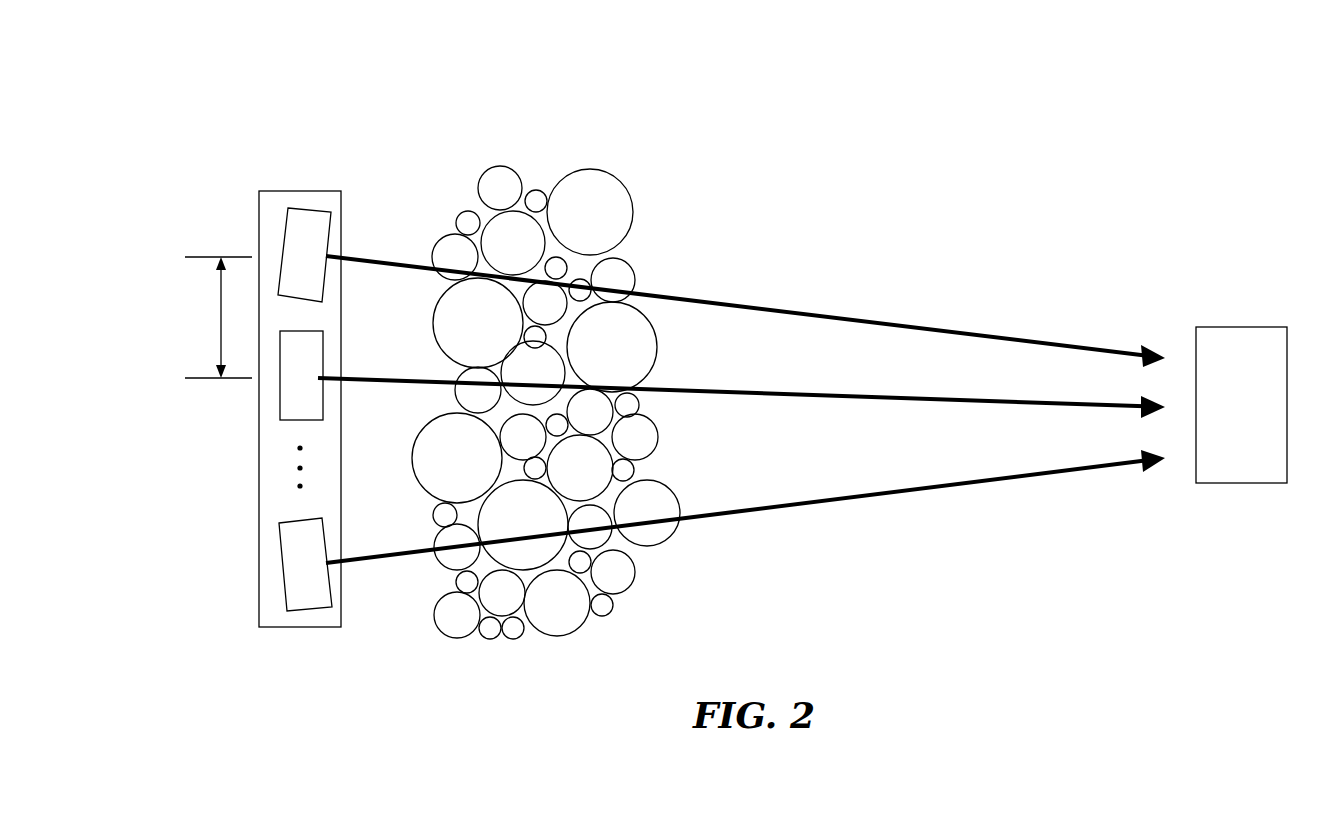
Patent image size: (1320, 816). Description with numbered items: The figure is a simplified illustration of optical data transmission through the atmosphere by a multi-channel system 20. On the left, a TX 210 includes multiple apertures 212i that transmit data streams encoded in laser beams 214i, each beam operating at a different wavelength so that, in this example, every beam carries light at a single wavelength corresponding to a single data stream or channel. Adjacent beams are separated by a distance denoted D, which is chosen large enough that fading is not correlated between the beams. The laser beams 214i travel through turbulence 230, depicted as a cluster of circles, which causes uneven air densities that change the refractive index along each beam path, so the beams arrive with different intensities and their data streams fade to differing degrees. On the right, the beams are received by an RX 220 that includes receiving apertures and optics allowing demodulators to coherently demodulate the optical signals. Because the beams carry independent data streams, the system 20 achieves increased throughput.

The multi-channel system 20 is at (1047, 150).
The TX 210 is at (303, 191).
The apertures 212i is at (289, 398).
The laser beams 214i is at (823, 393).
The RX 220 is at (1243, 327).
The turbulence 230 is at (635, 277).